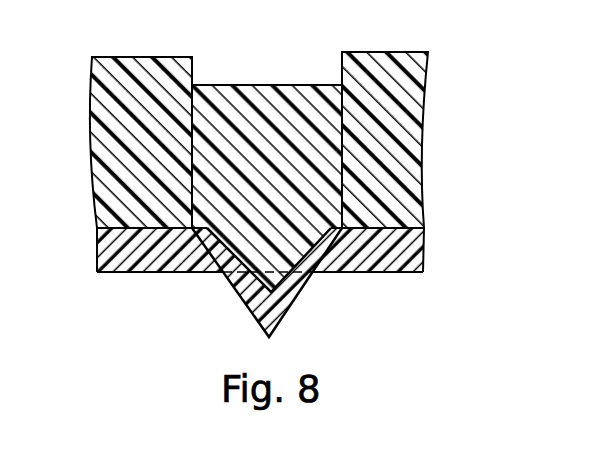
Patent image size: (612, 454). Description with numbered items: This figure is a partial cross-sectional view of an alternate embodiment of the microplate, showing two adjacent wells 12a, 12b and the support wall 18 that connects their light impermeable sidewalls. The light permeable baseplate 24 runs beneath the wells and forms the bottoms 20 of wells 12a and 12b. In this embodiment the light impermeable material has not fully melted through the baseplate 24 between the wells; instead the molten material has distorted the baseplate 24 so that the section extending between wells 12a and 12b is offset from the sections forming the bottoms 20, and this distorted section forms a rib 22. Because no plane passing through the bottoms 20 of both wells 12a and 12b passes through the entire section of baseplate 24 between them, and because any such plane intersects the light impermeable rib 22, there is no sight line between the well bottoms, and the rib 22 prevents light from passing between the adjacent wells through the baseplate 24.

The well 12a is at (138, 57).
The well 12b is at (390, 52).
The support wall 18 is at (288, 85).
The bottom 20 is at (124, 274).
The rib 22 is at (286, 268).
The baseplate 24 is at (425, 252).